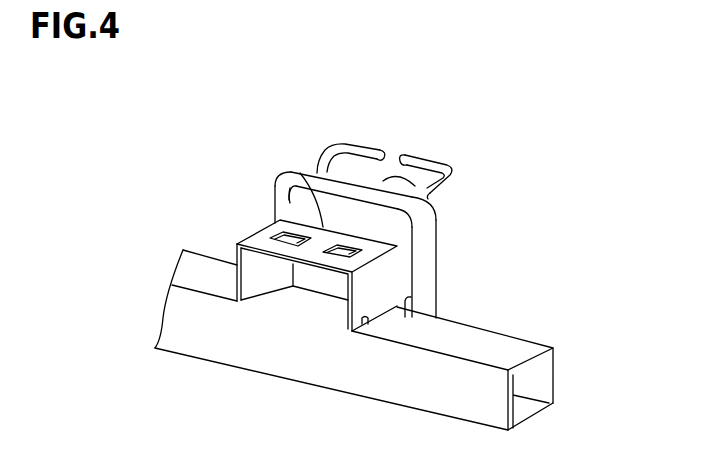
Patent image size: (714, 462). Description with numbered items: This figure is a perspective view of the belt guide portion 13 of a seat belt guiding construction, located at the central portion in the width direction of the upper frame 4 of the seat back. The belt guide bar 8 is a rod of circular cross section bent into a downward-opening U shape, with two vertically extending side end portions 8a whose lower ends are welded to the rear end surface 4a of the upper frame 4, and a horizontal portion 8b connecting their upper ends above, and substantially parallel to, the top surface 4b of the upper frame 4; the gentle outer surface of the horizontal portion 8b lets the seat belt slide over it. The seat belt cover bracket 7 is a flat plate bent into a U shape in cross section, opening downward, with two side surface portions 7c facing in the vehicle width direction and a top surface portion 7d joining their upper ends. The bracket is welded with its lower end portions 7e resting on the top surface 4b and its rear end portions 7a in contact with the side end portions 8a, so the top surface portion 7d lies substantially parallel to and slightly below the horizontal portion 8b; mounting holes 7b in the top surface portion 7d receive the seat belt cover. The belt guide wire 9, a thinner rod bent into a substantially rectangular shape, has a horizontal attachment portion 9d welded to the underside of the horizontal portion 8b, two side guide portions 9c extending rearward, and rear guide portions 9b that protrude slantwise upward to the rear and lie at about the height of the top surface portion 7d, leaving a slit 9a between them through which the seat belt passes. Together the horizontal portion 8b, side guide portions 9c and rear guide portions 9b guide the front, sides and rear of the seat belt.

The upper frame 4 is at (207, 350).
The rear end surface 4a is at (495, 348).
The top surface 4b is at (523, 350).
The seat belt cover bracket 7 is at (232, 257).
The rear end portions 7a is at (408, 318).
The mounting holes 7b is at (277, 237).
The side surface portions 7c is at (390, 300).
The top surface portion 7d is at (284, 173).
The lower end portions 7e is at (364, 325).
The belt guide bar 8 is at (438, 258).
The side end portions 8a is at (275, 207).
The horizontal portion 8b is at (300, 170).
The belt guide wire 9 is at (462, 168).
The slit 9a is at (398, 150).
The rear guide portions 9b is at (368, 148).
The side guide portions 9c is at (333, 145).
The horizontal attachment portion 9d is at (430, 195).
The belt guide portion 13 is at (448, 107).